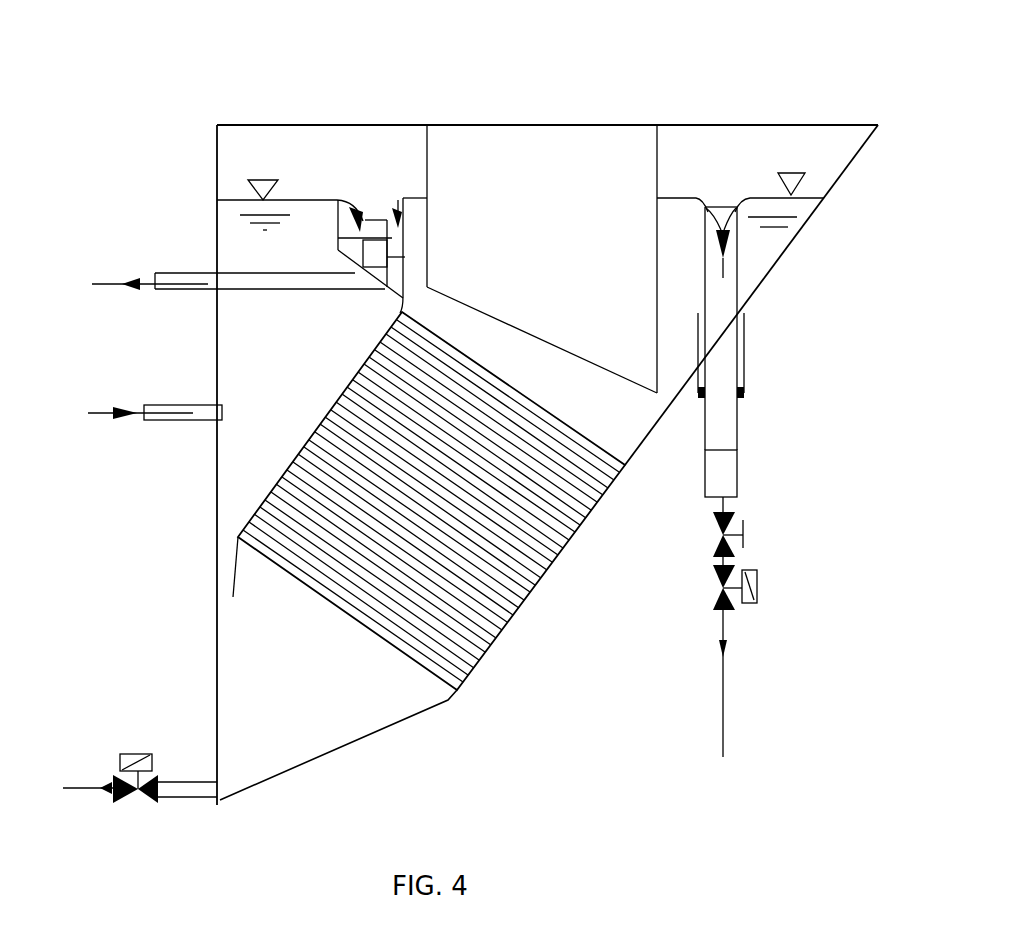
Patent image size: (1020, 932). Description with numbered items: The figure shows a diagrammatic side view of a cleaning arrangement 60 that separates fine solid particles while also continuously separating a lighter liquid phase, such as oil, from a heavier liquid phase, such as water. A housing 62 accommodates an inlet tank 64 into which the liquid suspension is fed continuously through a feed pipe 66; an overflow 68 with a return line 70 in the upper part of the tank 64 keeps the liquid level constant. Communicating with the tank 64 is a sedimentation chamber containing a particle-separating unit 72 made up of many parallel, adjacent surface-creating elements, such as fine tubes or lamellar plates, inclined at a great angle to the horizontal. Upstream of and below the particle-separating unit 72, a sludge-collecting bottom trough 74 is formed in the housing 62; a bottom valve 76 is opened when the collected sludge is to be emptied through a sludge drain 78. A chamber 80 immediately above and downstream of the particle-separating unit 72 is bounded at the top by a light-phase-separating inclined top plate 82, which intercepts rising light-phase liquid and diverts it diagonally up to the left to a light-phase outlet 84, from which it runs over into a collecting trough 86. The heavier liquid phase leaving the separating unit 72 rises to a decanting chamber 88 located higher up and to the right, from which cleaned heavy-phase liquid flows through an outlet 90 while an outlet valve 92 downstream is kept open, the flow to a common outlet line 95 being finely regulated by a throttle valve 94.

The cleaning arrangement 60 is at (180, 88).
The housing 62 is at (215, 498).
The inlet tank 64 is at (292, 338).
The feed pipe 66 is at (172, 422).
The overflow 68 is at (333, 200).
The return line 70 is at (185, 280).
The particle-separating unit 72 is at (437, 603).
The sludge-collecting bottom trough 74 is at (317, 722).
The bottom valve 76 is at (138, 755).
The sludge drain 78 is at (85, 787).
The chamber 80 is at (602, 417).
The light-phase-separating inclined top plate 82 is at (558, 348).
The light-phase outlet 84 is at (420, 215).
The collecting trough 86 is at (387, 245).
The decanting chamber 88 is at (760, 250).
The outlet 90 is at (730, 480).
The outlet valve 92 is at (757, 587).
The throttle valve 94 is at (743, 535).
The common outlet line 95 is at (723, 690).